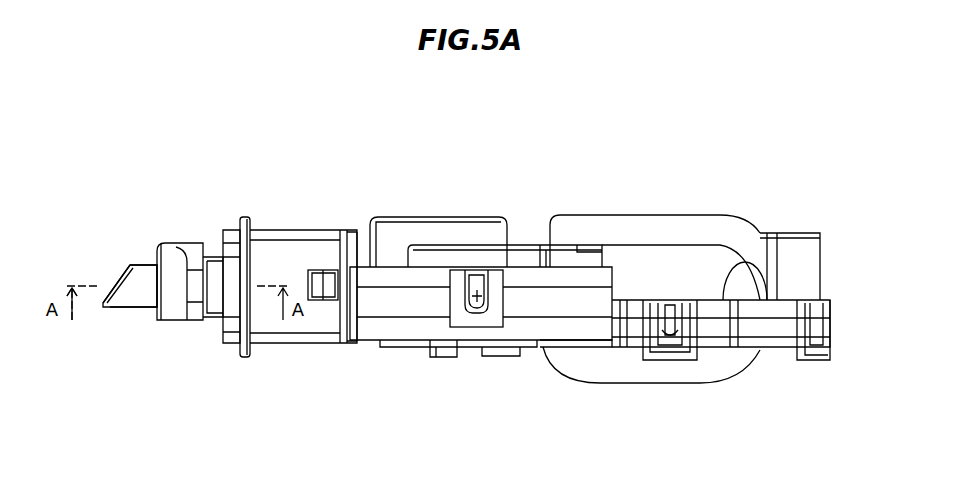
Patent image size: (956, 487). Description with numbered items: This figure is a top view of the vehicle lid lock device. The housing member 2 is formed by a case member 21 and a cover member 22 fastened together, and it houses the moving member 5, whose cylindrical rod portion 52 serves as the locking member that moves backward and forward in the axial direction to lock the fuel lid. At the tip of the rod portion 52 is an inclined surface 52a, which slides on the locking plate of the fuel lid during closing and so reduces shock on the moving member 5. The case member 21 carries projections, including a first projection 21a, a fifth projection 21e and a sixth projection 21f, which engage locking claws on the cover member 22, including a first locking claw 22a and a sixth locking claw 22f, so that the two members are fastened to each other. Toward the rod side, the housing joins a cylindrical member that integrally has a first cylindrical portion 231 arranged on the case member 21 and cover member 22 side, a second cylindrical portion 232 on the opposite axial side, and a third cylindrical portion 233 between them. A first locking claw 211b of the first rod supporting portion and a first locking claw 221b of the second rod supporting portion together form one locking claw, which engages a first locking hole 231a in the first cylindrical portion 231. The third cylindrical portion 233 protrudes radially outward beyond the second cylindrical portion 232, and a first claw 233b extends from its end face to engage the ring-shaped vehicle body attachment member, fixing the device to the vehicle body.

The housing member 2 is at (768, 208).
The moving member 5 is at (129, 323).
The rod portion 52 is at (138, 272).
The inclined surface 52a is at (117, 282).
The case member 21 is at (345, 203).
The first projection 21a is at (497, 283).
The fifth projection 21e is at (817, 340).
The sixth projection 21f is at (672, 345).
The cover member 22 is at (353, 355).
The first locking claw 22a is at (478, 305).
The sixth locking claw 22f is at (670, 323).
The first locking claw 211b is at (328, 278).
The first locking claw 221b is at (323, 300).
The first cylindrical portion 231 is at (275, 255).
The first locking hole 231a is at (315, 273).
The second cylindrical portion 232 is at (192, 250).
The third cylindrical portion 233 is at (242, 218).
The first claw 233b is at (220, 305).